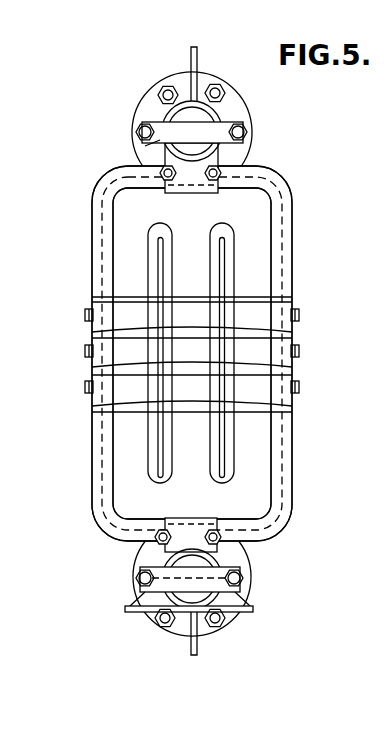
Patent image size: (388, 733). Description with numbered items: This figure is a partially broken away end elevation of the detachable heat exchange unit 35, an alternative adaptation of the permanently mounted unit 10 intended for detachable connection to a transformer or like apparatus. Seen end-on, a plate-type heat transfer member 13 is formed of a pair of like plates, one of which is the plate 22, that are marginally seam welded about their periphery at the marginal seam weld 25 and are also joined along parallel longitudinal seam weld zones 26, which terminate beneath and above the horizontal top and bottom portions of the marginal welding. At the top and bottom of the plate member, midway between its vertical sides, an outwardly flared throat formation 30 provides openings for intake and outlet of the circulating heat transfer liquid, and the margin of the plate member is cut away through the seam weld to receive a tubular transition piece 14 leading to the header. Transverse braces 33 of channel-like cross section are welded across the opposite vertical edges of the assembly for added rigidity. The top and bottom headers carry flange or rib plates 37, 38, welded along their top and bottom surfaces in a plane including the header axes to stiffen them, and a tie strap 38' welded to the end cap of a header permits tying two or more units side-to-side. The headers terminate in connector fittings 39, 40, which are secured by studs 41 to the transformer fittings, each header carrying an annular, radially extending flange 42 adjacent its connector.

The unit 10 is at (296, 444).
The plate-type heat transfer member 13 is at (123, 442).
The tubular transition piece 14 is at (225, 157).
The plate 22 is at (254, 237).
The marginal seam weld 25 is at (281, 253).
The seam weld zone 26 is at (217, 270).
The flared throat formation 30 is at (207, 194).
The transverse brace 33 is at (85, 318).
The detachable unit 35 is at (89, 266).
The flange plate 37 is at (198, 56).
The flange plate 38 is at (212, 648).
The tie strap 38' is at (157, 388).
The connector fitting 39 is at (248, 99).
The connector fitting 40 is at (241, 552).
The stud 41 is at (213, 86).
The annular flange 42 is at (242, 113).